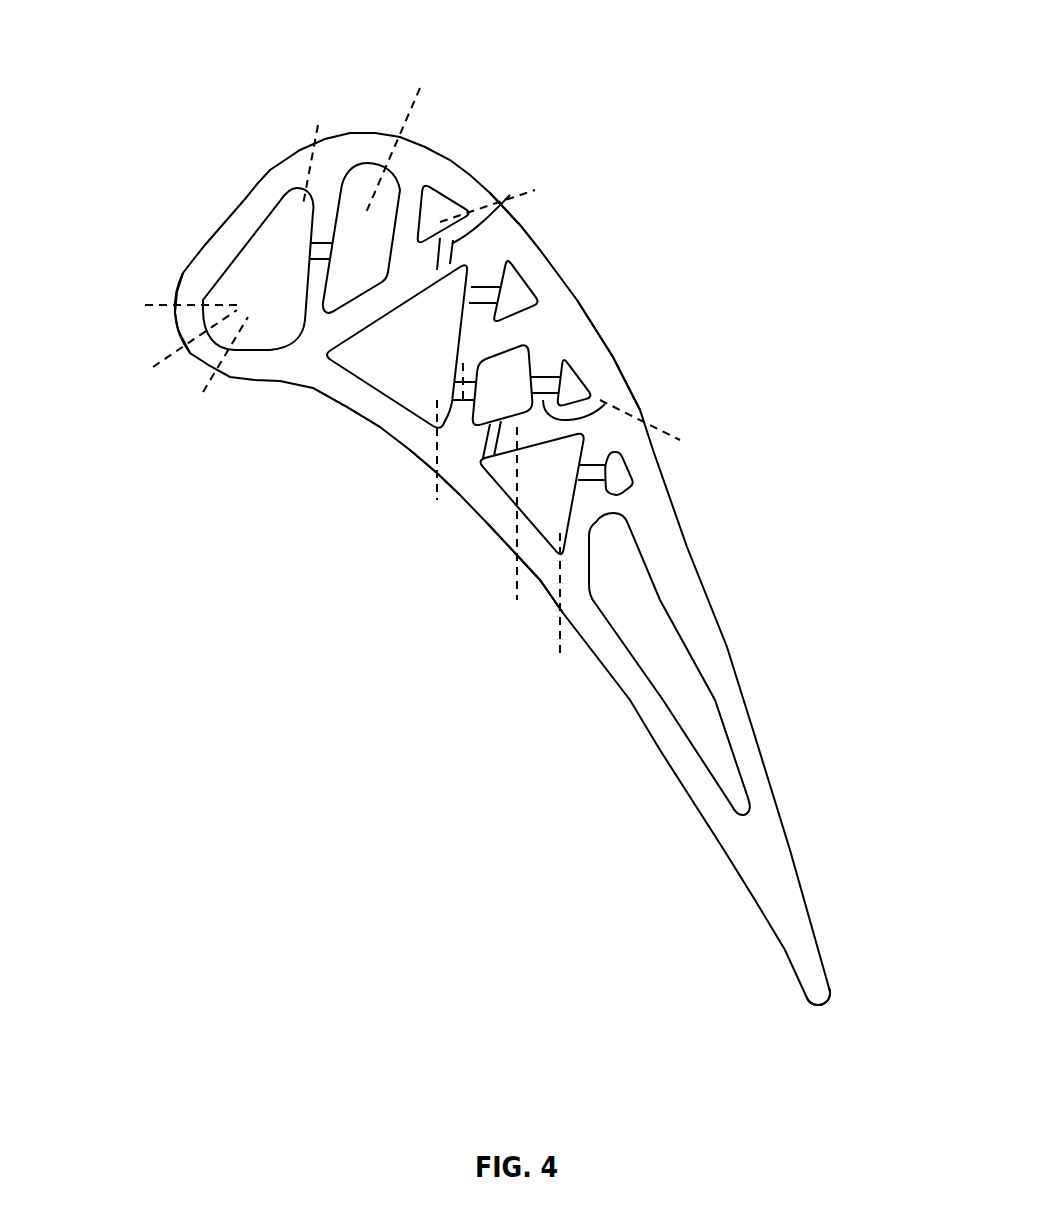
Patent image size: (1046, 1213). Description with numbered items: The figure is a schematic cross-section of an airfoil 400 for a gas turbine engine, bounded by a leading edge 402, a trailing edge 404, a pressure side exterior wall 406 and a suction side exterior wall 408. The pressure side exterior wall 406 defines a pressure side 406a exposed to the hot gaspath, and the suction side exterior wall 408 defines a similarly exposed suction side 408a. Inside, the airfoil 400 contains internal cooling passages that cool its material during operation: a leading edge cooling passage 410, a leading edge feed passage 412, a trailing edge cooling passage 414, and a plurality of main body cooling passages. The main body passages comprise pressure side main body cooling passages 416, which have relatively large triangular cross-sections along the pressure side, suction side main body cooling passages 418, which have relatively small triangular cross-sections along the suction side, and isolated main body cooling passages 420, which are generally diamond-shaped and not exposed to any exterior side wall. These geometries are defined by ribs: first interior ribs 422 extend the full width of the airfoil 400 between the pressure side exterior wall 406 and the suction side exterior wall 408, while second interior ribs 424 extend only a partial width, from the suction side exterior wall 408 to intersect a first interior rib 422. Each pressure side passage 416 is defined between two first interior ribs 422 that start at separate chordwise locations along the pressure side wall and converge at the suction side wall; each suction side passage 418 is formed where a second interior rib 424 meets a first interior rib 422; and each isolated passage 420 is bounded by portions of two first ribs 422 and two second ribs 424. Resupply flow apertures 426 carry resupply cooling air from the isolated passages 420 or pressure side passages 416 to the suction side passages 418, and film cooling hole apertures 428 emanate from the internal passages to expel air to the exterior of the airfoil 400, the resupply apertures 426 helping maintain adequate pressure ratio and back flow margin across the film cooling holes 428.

The airfoil 400 is at (140, 38).
The leading edge 402 is at (177, 328).
The trailing edge 404 is at (818, 1012).
The pressure side exterior wall 406 is at (358, 397).
The pressure side 406a is at (507, 545).
The suction side exterior wall 408 is at (513, 246).
The suction side 408a is at (612, 362).
The leading edge cooling passage 410 is at (245, 268).
The leading edge feed passage 412 is at (361, 212).
The trailing edge cooling passage 414 is at (682, 655).
The pressure side main body cooling passages 416 is at (476, 400).
The suction side main body cooling passages 418 is at (441, 216).
The isolated main body cooling passages 420 is at (460, 460).
The first interior ribs 422 is at (371, 294).
The second interior ribs 424 is at (400, 205).
The resupply flow apertures 426 is at (510, 195).
The film cooling hole apertures 428 is at (410, 110).